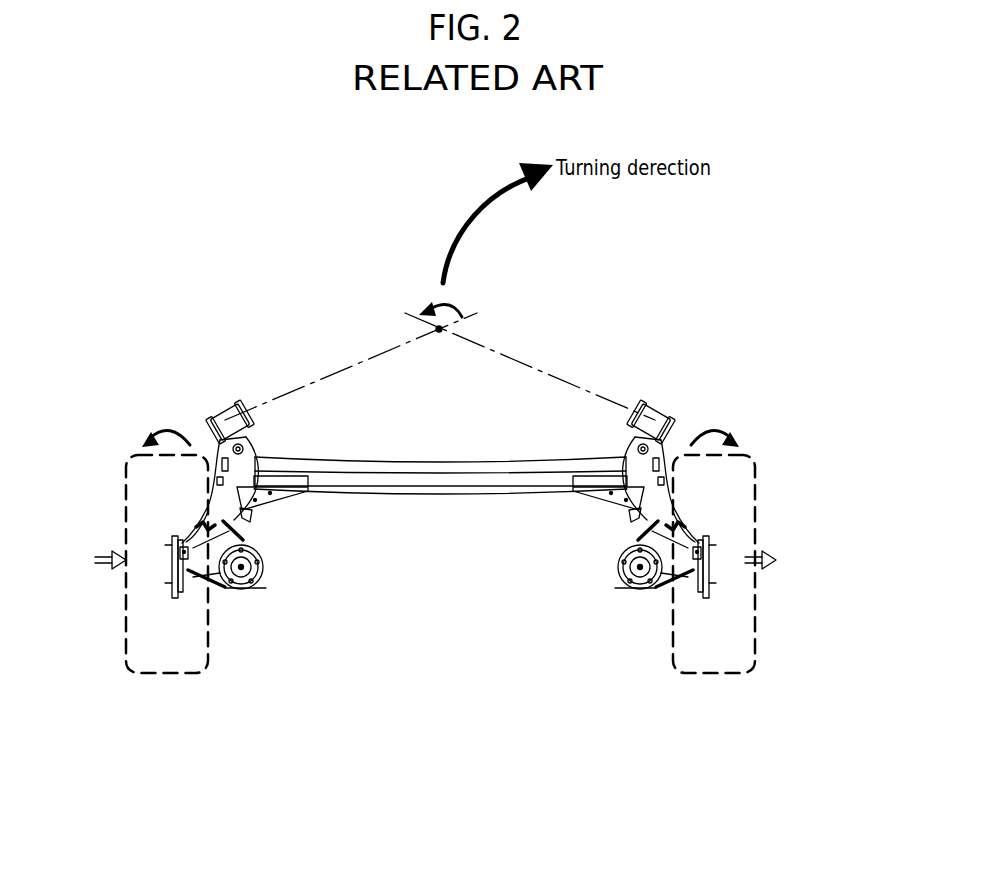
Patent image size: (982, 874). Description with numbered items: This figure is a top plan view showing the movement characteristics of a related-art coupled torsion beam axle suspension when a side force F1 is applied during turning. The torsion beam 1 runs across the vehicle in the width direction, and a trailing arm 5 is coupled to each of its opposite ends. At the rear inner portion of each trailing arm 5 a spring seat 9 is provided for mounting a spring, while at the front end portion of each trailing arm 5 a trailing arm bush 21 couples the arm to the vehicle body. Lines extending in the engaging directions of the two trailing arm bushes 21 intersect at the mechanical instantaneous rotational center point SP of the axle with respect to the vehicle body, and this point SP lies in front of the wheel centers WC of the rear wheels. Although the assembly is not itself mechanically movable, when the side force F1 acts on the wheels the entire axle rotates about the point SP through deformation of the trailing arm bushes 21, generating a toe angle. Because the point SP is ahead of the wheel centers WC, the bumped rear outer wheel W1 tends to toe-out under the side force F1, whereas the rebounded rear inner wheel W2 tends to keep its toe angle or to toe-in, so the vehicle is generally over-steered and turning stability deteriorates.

The torsion beam 1 is at (438, 497).
The trailing arm 5 is at (252, 516).
The spring seat 9 is at (263, 573).
The trailing arm bush 21 is at (229, 405).
The instantaneous rotational center point SP is at (438, 338).
The wheel center WC is at (166, 568).
The rear outer wheel W1 is at (176, 676).
The rear inner wheel W2 is at (722, 676).
The side force F1 is at (436, 561).